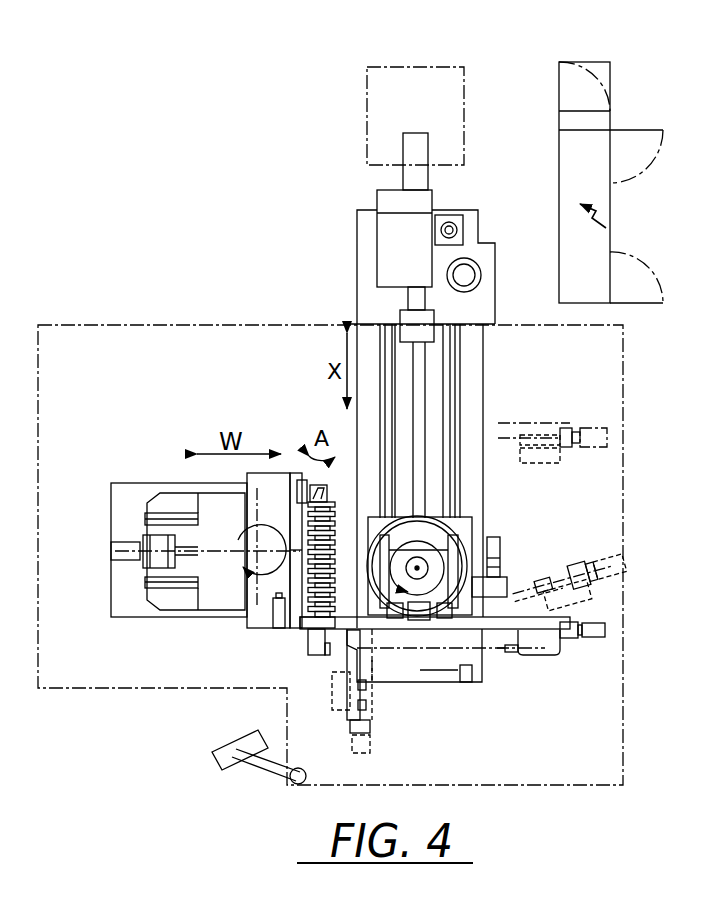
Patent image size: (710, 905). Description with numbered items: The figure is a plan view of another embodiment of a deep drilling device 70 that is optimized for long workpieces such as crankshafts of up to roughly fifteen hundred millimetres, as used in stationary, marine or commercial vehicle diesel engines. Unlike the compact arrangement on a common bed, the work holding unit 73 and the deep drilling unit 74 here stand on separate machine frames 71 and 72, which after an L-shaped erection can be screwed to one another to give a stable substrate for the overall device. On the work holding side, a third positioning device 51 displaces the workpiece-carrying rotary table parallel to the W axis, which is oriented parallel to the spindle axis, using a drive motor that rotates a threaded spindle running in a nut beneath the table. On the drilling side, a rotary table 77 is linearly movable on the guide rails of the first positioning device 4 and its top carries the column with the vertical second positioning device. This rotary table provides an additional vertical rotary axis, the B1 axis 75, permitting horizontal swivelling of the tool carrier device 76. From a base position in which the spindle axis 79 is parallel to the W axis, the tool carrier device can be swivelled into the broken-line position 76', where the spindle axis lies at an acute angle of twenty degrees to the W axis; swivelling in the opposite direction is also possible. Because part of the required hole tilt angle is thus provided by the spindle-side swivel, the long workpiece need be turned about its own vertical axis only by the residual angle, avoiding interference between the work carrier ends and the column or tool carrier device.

The deep drilling device 70 is at (257, 283).
The deep drilling unit 74 is at (505, 255).
The machine frame 72 is at (478, 356).
The rotary table 77 is at (463, 510).
The first positioning device 4 is at (370, 437).
The B1 axis 75 is at (430, 568).
The B1 axis B1 is at (420, 567).
The spindle axis 79 is at (492, 650).
The work holding unit 73 is at (178, 458).
The machine frame 71 is at (133, 607).
The third positioning device 51 is at (132, 507).
The tool carrier device 76 is at (598, 655).
The swivelled position of tool carrier device 76' is at (519, 589).